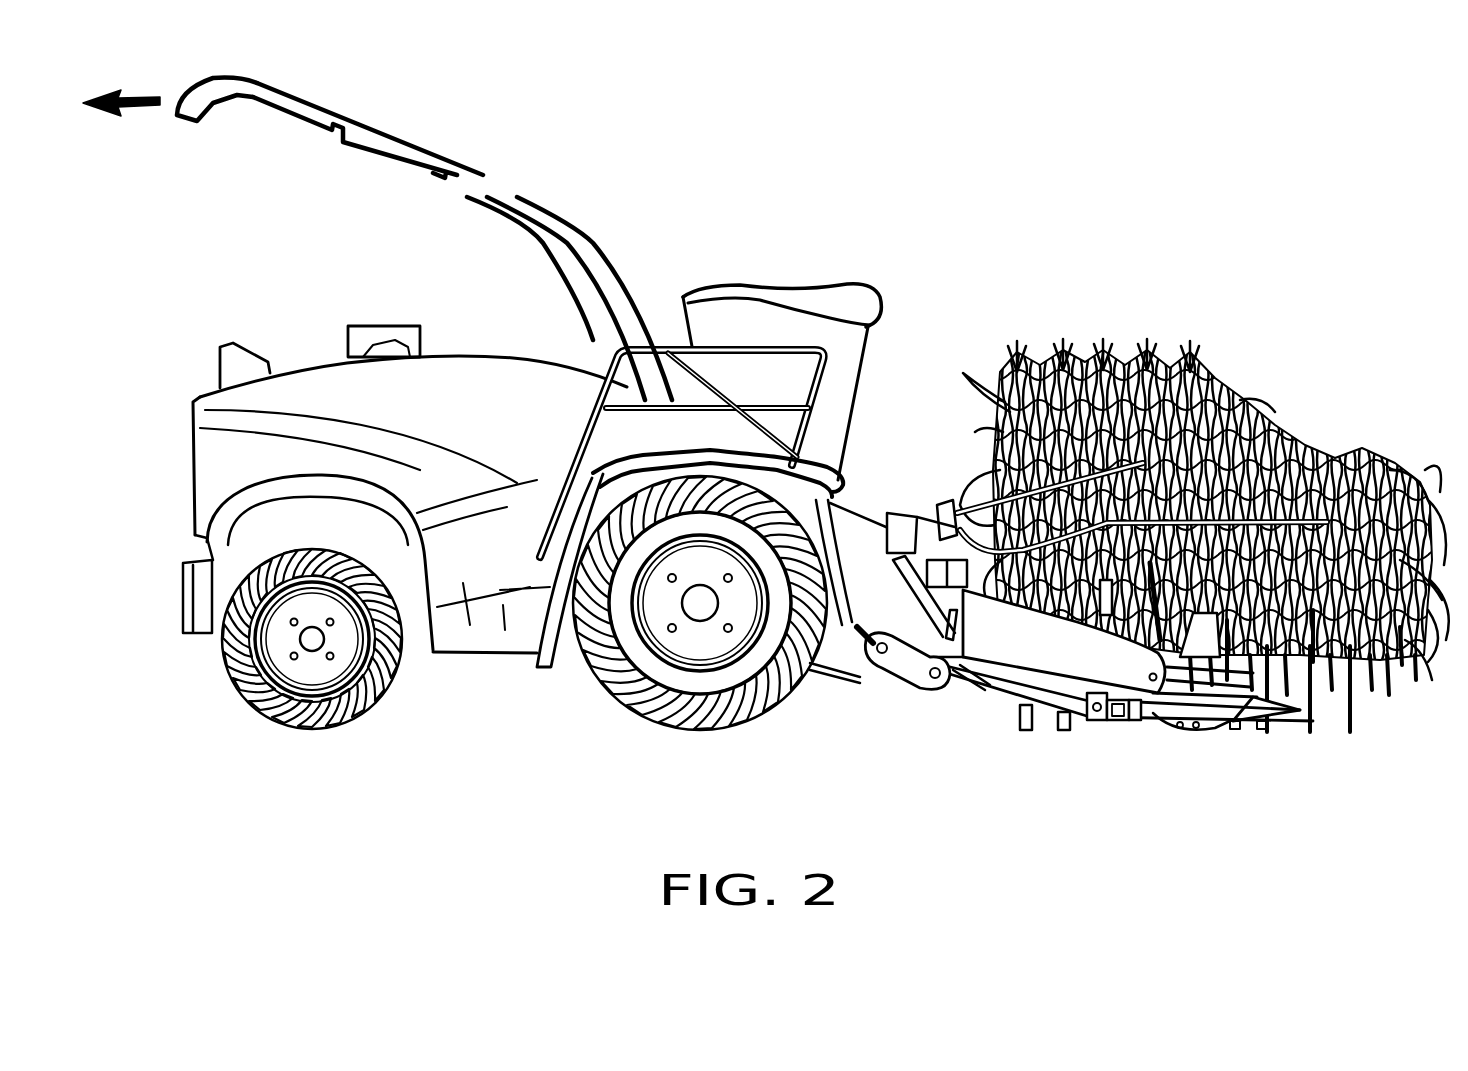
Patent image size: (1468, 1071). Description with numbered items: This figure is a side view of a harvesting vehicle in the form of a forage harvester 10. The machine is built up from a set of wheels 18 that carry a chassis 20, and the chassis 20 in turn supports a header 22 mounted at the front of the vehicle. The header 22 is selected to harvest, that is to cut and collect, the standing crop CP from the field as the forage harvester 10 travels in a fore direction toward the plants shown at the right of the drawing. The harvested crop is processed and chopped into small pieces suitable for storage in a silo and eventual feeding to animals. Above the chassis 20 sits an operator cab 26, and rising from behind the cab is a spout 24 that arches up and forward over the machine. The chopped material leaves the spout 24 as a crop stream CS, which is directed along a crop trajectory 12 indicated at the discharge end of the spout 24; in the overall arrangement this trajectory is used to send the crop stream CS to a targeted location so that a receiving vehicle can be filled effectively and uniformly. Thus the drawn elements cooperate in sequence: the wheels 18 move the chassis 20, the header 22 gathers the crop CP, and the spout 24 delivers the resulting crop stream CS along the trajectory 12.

The forage harvester 10 is at (1030, 264).
The crop trajectory 12 is at (145, 63).
The wheels 18 is at (325, 723).
The chassis 20 is at (455, 658).
The header 22 is at (1243, 655).
The spout 24 is at (577, 236).
The operator cab 26 is at (812, 268).
The crop stream CS is at (143, 104).
The crop CP is at (1330, 733).